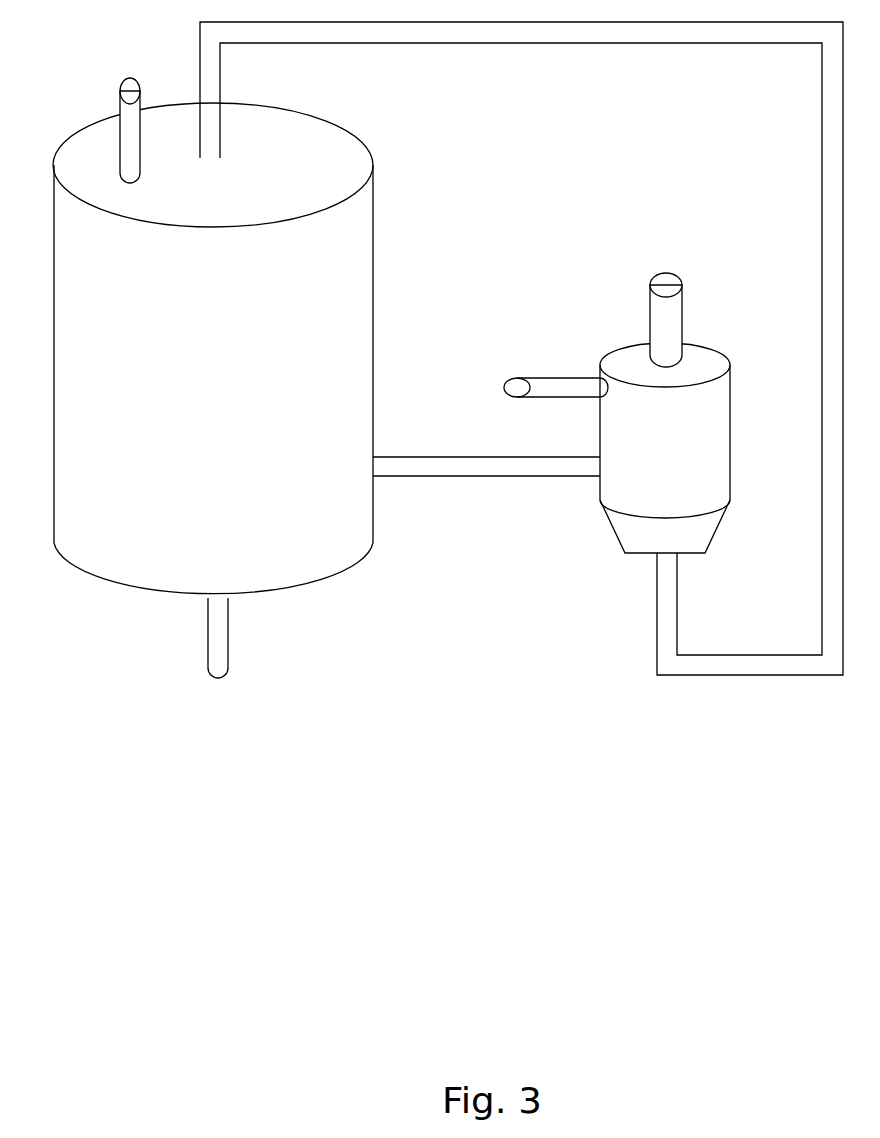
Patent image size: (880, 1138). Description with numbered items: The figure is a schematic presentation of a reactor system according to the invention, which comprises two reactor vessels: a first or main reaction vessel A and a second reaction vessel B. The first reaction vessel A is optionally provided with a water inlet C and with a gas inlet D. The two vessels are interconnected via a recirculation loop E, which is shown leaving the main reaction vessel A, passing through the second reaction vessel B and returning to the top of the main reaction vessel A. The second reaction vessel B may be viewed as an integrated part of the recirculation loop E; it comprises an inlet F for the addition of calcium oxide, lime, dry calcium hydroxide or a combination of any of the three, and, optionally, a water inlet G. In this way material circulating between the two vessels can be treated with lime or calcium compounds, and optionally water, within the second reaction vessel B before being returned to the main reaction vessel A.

The first or main reaction vessel A is at (213, 348).
The second reaction vessel B is at (665, 448).
The water inlet C is at (132, 106).
The gas inlet D is at (217, 663).
The recirculation loop E is at (521, 380).
The inlet for addition of calcium oxide, lime, dry calcium hydroxide or a combinatio F is at (665, 294).
The water inlet G is at (527, 389).